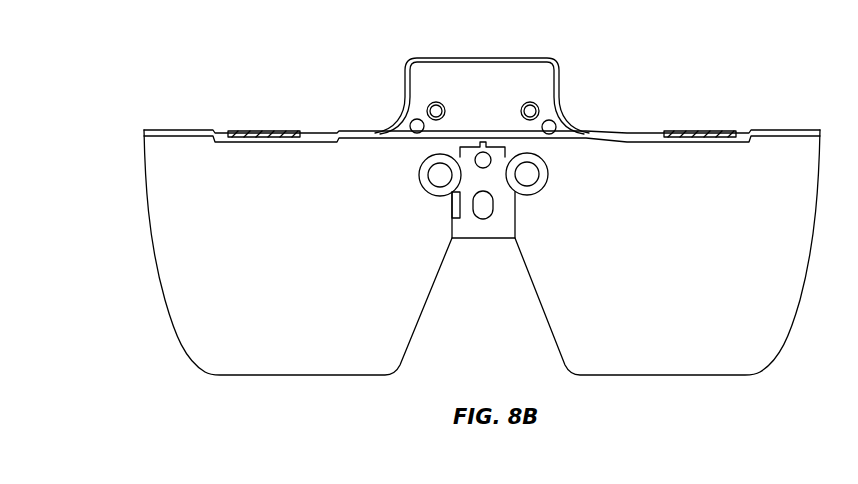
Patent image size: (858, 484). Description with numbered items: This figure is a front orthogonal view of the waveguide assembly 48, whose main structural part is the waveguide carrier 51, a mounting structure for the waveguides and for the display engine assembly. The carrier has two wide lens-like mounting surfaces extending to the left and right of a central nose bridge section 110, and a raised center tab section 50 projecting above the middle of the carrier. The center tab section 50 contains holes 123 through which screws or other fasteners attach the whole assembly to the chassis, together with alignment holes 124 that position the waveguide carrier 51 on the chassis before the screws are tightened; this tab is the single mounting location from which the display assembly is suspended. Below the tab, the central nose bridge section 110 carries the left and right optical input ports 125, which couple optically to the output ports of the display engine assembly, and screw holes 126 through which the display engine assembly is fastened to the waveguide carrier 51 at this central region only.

The waveguide assembly 48 is at (168, 95).
The center tab section 50 is at (559, 78).
The waveguide carrier 51 is at (778, 352).
The central nose bridge section 110 is at (482, 239).
The holes 123 is at (436, 102).
The alignment holes 124 is at (410, 123).
The optical input ports 125 is at (444, 155).
The screw holes 126 is at (487, 168).